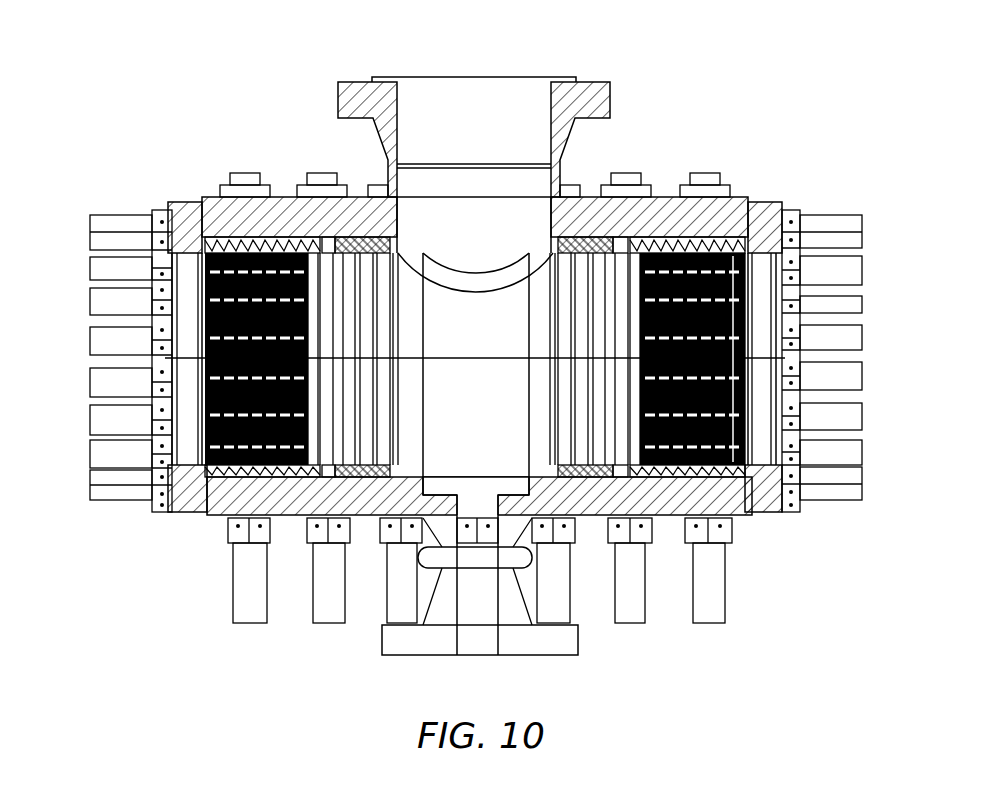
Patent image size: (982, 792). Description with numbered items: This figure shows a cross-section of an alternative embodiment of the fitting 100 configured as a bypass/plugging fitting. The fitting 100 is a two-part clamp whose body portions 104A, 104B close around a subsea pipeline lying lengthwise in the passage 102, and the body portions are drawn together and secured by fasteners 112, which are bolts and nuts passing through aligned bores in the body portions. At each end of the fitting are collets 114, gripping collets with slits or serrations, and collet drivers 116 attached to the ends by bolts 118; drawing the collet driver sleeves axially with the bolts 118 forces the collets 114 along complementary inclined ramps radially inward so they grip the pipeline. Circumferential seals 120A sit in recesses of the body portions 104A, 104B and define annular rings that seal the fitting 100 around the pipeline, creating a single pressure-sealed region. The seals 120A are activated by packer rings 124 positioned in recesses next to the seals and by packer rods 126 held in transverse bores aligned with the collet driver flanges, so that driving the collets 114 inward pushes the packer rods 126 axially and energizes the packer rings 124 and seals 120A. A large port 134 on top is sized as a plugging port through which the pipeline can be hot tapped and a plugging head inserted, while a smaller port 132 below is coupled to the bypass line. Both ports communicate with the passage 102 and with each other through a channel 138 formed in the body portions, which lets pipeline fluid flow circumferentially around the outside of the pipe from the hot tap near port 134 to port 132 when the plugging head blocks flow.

The fitting 100 is at (752, 50).
The passage 102 is at (497, 424).
The body portion 104A is at (742, 197).
The body portion 104B is at (736, 516).
The fasteners 112 is at (320, 623).
The collets 114 is at (204, 237).
The collet drivers 116 is at (187, 275).
The bolts 118 is at (120, 216).
The seals 120A is at (583, 297).
The packer rings 124 is at (338, 245).
The packer rods 126 is at (323, 243).
The port 132 is at (518, 656).
The port 134 is at (350, 80).
The channel 138 is at (497, 492).